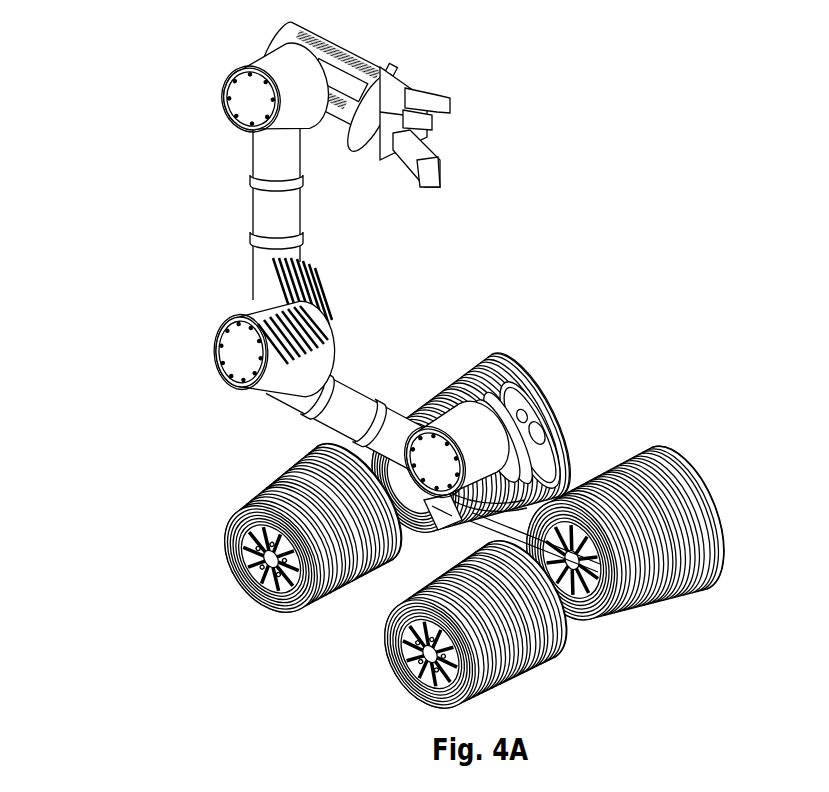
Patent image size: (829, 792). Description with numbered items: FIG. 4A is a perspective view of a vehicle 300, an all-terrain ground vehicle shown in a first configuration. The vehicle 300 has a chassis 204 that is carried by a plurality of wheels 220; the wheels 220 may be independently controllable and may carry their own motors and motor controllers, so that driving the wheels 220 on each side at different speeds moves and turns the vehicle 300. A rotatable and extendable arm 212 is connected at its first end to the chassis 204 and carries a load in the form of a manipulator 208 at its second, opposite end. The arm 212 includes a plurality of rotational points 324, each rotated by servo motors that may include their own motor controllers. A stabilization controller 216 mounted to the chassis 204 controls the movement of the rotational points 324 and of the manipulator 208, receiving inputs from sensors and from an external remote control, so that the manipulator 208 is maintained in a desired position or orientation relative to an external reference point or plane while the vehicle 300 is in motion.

The vehicle 300 is at (124, 111).
The rotational points 324 is at (243, 98).
The manipulator 208 is at (428, 174).
The arm 212 is at (282, 234).
The chassis 204 is at (573, 440).
The wheels 220 is at (230, 528).
The stabilization controller 216 is at (433, 530).